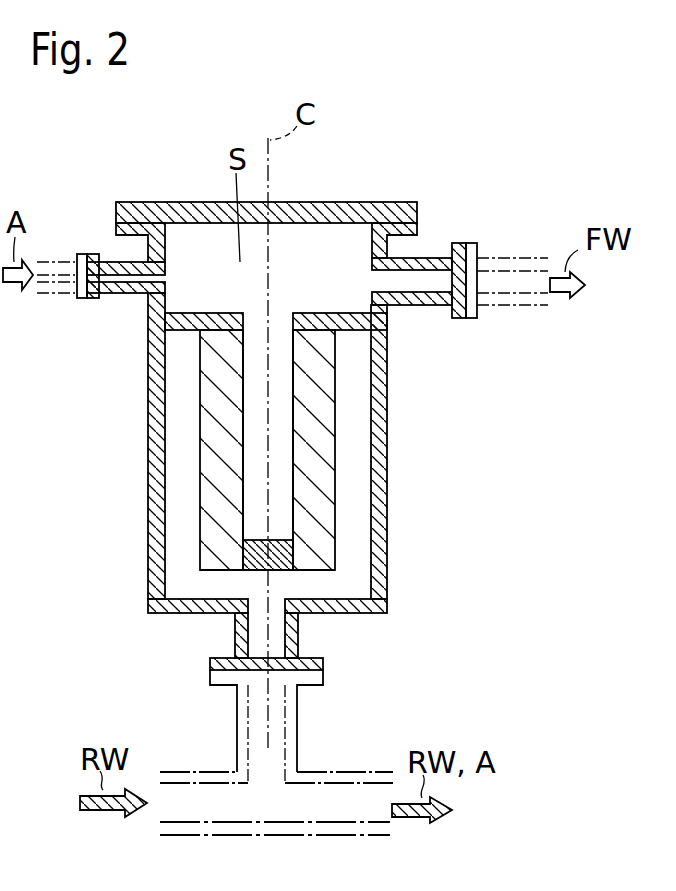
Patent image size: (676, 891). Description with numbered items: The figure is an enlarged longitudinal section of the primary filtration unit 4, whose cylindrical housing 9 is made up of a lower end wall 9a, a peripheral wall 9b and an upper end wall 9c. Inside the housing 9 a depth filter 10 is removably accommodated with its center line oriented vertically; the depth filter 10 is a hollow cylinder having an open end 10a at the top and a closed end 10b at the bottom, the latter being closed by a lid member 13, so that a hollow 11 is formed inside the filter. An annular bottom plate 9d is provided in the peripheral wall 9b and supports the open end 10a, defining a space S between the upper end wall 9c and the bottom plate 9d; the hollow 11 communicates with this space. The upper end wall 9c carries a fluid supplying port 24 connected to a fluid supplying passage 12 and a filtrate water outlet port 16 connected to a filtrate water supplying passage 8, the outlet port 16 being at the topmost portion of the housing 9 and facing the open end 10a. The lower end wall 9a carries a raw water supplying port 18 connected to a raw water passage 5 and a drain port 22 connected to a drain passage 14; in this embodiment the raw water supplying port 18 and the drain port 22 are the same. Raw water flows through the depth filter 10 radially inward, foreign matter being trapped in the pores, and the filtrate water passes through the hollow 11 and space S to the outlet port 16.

The primary filtration unit 4 is at (434, 156).
The raw water passage 5 is at (201, 772).
The filtrate water supplying passage 8 is at (512, 258).
The housing 9 is at (144, 530).
The lower end wall 9a is at (369, 614).
The peripheral wall 9b is at (148, 570).
The upper end wall 9c is at (369, 202).
The annular bottom plate 9d is at (200, 295).
The depth filter 10 is at (200, 445).
The open end 10a is at (281, 318).
The closed end 10b is at (230, 572).
The hollow 11 is at (257, 475).
The fluid supplying passage 12 is at (72, 292).
The lid member 13 is at (272, 571).
The drain passage 14 is at (330, 772).
The filtrate water outlet port 16 is at (428, 283).
The raw water supplying port 18 is at (219, 698).
The drain port 22 is at (260, 638).
The fluid supplying port 24 is at (130, 278).